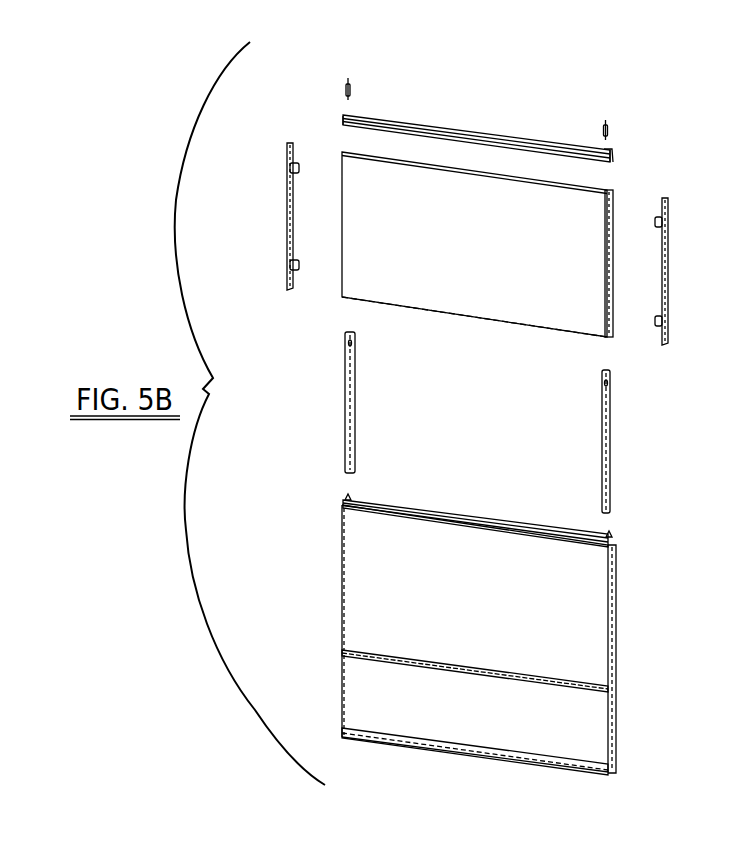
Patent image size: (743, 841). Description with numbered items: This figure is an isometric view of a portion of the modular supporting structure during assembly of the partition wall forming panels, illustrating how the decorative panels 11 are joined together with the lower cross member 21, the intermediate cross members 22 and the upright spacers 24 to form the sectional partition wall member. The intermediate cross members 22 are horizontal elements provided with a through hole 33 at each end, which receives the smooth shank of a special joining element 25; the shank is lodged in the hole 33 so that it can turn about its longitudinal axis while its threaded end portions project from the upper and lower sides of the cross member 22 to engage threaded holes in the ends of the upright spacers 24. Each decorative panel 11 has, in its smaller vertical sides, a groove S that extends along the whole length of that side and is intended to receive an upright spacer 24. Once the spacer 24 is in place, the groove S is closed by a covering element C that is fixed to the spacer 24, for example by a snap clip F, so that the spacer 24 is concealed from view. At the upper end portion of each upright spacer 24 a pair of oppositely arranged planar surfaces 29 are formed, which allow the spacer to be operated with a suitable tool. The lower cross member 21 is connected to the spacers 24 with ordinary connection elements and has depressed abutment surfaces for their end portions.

The decorative panel 11 is at (476, 251).
The lower cross member 21 is at (465, 751).
The intermediate cross member 22 is at (476, 130).
The upright spacer 24 is at (350, 448).
The joining element 25 is at (345, 88).
The planar surfaces 29 is at (348, 343).
The through hole 33 is at (343, 118).
The covering element C is at (288, 222).
The snap clip F is at (300, 167).
The groove S is at (345, 152).